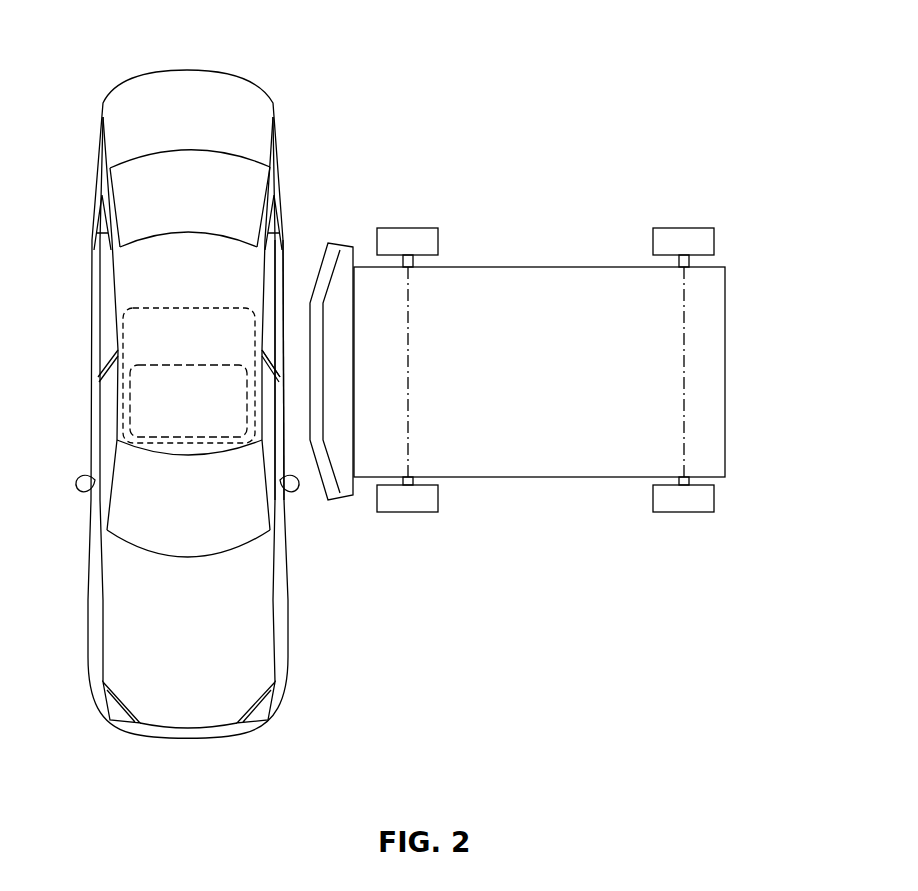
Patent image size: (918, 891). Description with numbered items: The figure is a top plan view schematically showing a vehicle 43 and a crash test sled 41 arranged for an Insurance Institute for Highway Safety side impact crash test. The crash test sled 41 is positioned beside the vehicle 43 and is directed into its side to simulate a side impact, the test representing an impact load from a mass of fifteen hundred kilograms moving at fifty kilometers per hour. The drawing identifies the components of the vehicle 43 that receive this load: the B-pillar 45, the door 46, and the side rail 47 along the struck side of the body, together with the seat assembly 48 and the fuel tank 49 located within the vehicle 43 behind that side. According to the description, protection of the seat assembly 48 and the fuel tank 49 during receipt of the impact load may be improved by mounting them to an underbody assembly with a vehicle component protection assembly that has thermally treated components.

The crash test sled 41 is at (727, 256).
The vehicle 43 is at (268, 96).
The B-pillar 45 is at (262, 352).
The door 46 is at (281, 267).
The side rail 47 is at (262, 352).
The seat assembly 48 is at (125, 398).
The fuel tank 49 is at (122, 333).